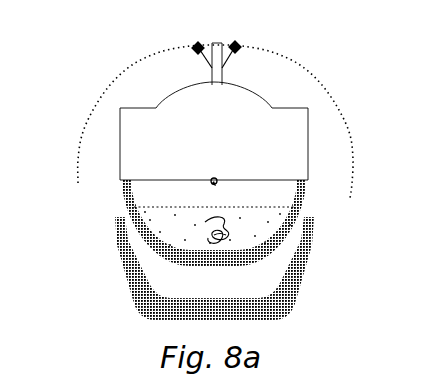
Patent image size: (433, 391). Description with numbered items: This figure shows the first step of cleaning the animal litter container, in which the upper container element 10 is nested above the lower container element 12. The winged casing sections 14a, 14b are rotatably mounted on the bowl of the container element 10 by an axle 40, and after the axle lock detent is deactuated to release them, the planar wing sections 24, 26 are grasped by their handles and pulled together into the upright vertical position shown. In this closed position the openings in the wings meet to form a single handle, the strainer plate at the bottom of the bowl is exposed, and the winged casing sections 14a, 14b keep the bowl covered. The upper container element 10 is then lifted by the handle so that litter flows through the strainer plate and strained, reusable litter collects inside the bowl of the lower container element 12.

The container element 10 is at (123, 197).
The lower container element 12 is at (305, 262).
The winged casing section 14a is at (302, 143).
The winged casing section 14b is at (120, 135).
The planar wing section 24 is at (240, 48).
The planar wing section 26 is at (196, 48).
The axle 40 is at (216, 184).